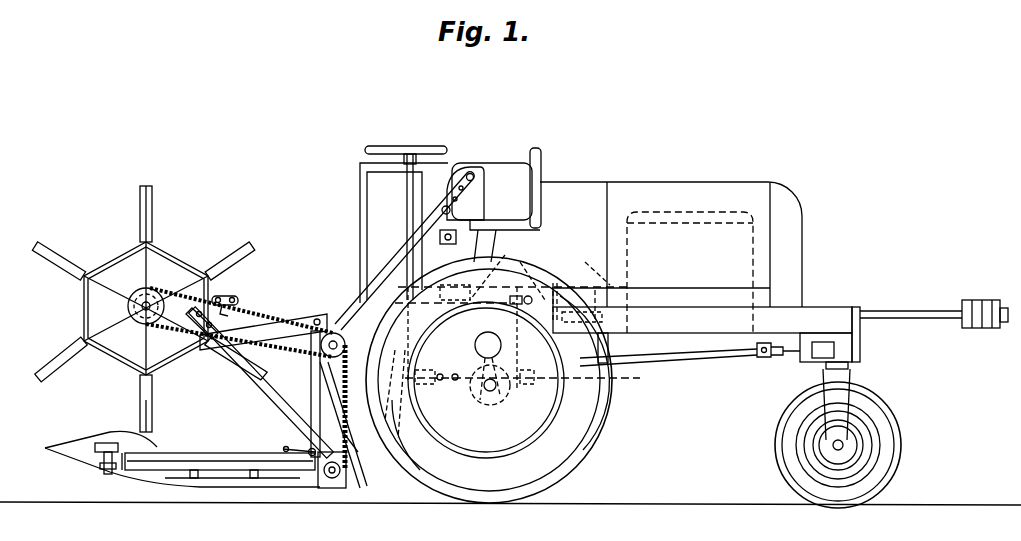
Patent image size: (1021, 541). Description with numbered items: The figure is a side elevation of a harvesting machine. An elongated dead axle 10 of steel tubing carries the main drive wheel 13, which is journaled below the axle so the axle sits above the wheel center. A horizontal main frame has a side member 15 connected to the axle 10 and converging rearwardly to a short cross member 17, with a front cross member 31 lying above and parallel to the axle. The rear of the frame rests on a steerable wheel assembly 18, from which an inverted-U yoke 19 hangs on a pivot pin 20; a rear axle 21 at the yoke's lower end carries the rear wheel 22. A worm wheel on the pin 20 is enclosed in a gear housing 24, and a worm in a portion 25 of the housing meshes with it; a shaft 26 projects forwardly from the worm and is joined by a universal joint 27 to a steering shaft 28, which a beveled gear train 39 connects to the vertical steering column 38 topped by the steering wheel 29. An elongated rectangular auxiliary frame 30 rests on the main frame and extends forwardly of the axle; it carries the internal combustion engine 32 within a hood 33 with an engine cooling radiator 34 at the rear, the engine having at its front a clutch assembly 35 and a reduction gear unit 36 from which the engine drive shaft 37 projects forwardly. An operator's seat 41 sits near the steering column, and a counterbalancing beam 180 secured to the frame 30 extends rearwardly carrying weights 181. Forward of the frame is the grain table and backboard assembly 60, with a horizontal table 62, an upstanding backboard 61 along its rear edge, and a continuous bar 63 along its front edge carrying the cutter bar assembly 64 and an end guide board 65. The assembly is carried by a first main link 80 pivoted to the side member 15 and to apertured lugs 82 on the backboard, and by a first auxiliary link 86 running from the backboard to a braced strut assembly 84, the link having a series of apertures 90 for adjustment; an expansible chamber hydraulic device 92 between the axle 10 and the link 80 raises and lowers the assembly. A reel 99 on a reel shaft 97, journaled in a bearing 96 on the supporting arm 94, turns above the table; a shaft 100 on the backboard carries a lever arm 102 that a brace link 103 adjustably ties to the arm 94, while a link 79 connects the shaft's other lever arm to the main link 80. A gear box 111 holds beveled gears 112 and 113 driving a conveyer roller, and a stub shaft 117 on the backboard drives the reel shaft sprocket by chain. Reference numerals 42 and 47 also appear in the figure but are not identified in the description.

The dead axle 10 is at (505, 388).
The main drive wheel 13 is at (413, 479).
The side member 15 is at (611, 363).
The cross member 17 is at (846, 308).
The steerable wheel assembly 18 is at (860, 327).
The yoke 19 is at (848, 383).
The pivot pin 20 is at (850, 369).
The rear axle 21 is at (845, 445).
The rear wheel 22 is at (776, 466).
The gear housing 24 is at (850, 351).
The housing portion 25 is at (800, 365).
The shaft 26 is at (770, 357).
The universal joint 27 is at (757, 352).
The steering shaft 28 is at (688, 360).
The steering wheel 29 is at (398, 148).
The auxiliary frame 30 is at (745, 297).
The front cross member 31 is at (500, 266).
The internal combustion engine 32 is at (667, 212).
The hood 33 is at (740, 182).
The engine cooling radiator 34 is at (800, 214).
The clutch assembly 35 is at (600, 270).
The reduction gear unit 36 is at (590, 292).
The engine drive shaft 37 is at (550, 271).
The steering column 38 is at (407, 242).
The beveled gear train 39 is at (392, 422).
The operator's seat 41 is at (530, 190).
The dash 42 is at (360, 223).
The power take-off 47 is at (525, 293).
The grain table and backboard assembly 60 is at (263, 490).
The backboard 61 is at (316, 362).
The table 62 is at (156, 478).
The continuous bar 63 is at (113, 473).
The cutter bar assembly 64 is at (108, 441).
The guide board 65 is at (80, 440).
The link 79 is at (396, 440).
The first main link 80 is at (358, 452).
The apertured lugs 82 is at (330, 490).
The braced strut assembly 84 is at (440, 252).
The first auxiliary link 86 is at (378, 277).
The series of apertures 90 is at (470, 173).
The expansible chamber hydraulic device 92 is at (475, 396).
The supporting arm 94 is at (290, 318).
The bearing 96 is at (178, 259).
The reel shaft 97 is at (142, 296).
The reel 99 is at (150, 236).
The shaft 100 is at (300, 440).
The lever arm 102 is at (283, 450).
The brace link 103 is at (268, 400).
The gear box 111 is at (361, 490).
The beveled gear 112 is at (312, 490).
The beveled gear 113 is at (300, 490).
The stub shaft 117 is at (344, 300).
The elongated beam 180 is at (920, 311).
The weights 181 is at (984, 295).